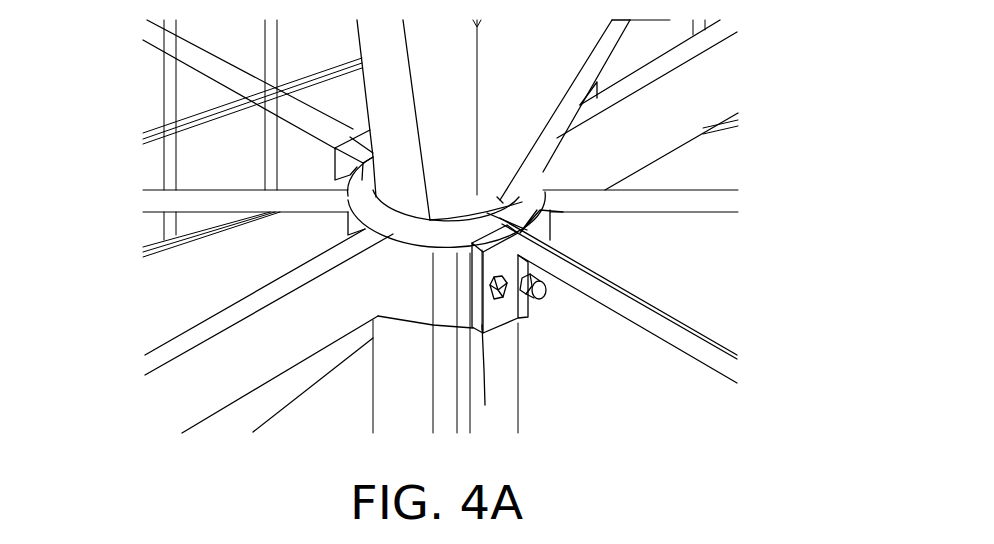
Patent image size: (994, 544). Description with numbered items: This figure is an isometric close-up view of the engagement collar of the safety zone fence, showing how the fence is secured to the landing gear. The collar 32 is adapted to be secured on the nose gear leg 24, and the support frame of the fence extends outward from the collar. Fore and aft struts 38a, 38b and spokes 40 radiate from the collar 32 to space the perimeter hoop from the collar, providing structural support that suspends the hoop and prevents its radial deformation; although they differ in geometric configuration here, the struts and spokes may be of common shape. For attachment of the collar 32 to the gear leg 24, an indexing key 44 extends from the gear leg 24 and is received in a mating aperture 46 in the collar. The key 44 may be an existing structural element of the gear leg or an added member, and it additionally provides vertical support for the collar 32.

The nose gear leg 24 is at (485, 407).
The collar 32 is at (402, 287).
The fore strut 38a is at (223, 368).
The aft strut 38b is at (660, 105).
The spoke 40 is at (187, 202).
The indexing key 44 is at (518, 320).
The mating aperture 46 is at (467, 422).